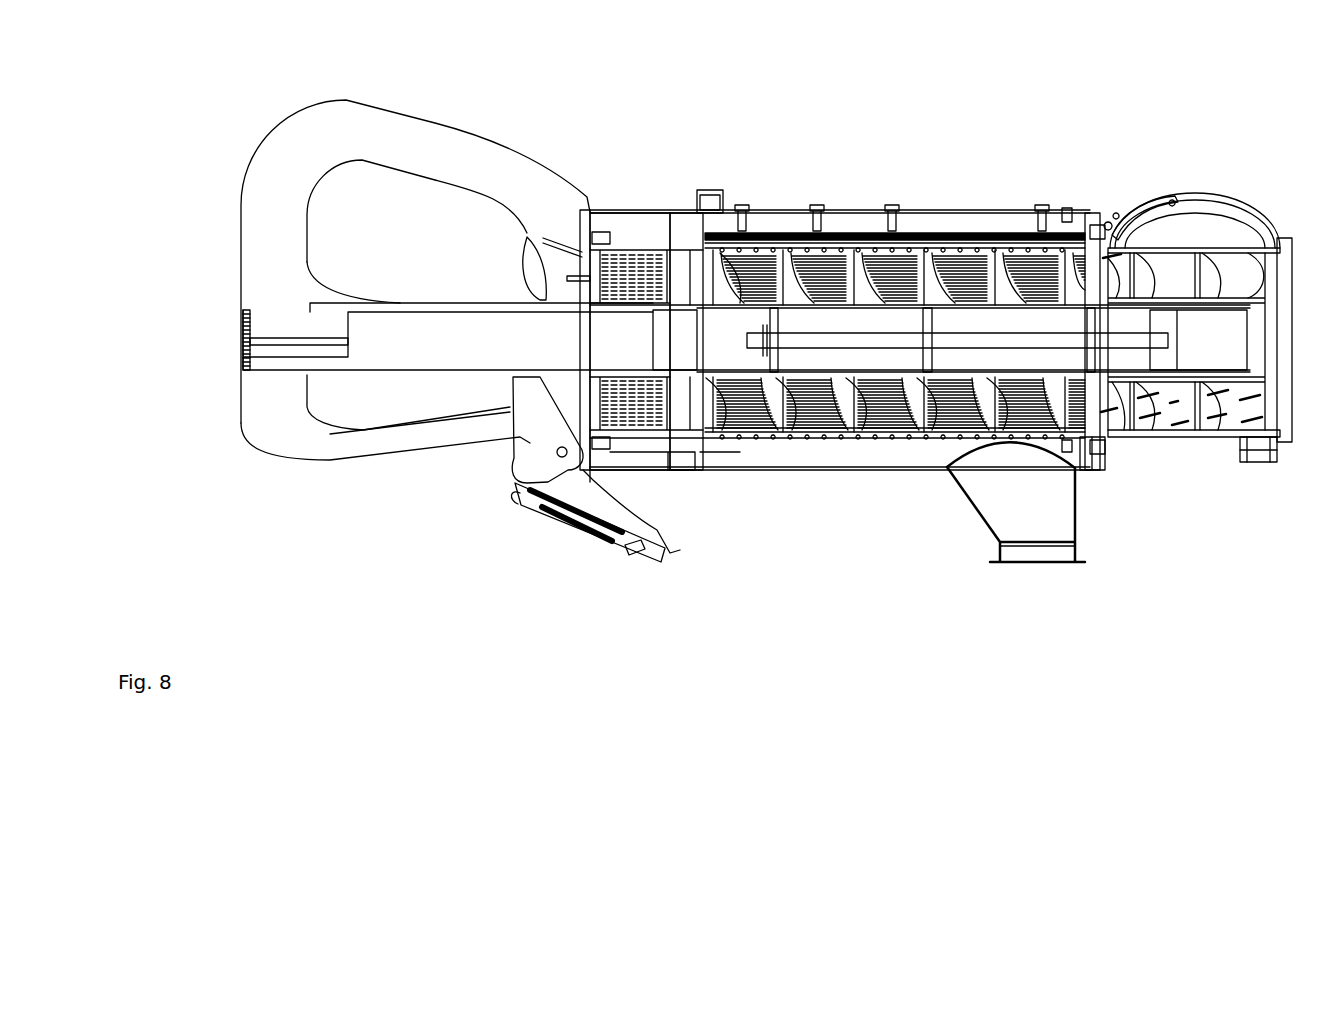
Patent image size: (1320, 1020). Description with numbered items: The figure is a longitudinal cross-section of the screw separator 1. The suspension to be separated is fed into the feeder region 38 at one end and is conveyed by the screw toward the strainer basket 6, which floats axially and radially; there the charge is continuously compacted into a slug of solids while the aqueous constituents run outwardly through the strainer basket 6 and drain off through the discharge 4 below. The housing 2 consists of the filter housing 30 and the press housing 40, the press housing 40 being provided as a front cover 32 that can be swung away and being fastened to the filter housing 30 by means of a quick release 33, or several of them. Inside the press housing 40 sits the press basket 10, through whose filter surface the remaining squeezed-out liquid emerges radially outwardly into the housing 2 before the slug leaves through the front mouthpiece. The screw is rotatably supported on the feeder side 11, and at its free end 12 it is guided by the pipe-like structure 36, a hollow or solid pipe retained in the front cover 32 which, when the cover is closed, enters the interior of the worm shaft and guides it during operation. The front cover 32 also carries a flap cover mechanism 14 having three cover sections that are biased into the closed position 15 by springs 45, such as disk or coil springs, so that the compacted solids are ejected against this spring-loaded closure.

The screw separator 1 is at (1186, 303).
The housing 2 is at (883, 115).
The discharge 4 is at (1036, 575).
The strainer basket 6 is at (833, 270).
The press basket 10 is at (641, 245).
The feeder side 11 is at (1163, 457).
The free end 12 is at (705, 483).
The flap cover mechanism 14 is at (487, 270).
The closed position 15 is at (492, 398).
The filter housing 30 is at (1010, 140).
The front cover 32 is at (597, 175).
The quick release 33 is at (726, 188).
The pipe-like structure 36 is at (587, 313).
The feeder region 38 is at (1141, 185).
The press housing 40 is at (663, 150).
The springs 45 is at (568, 535).